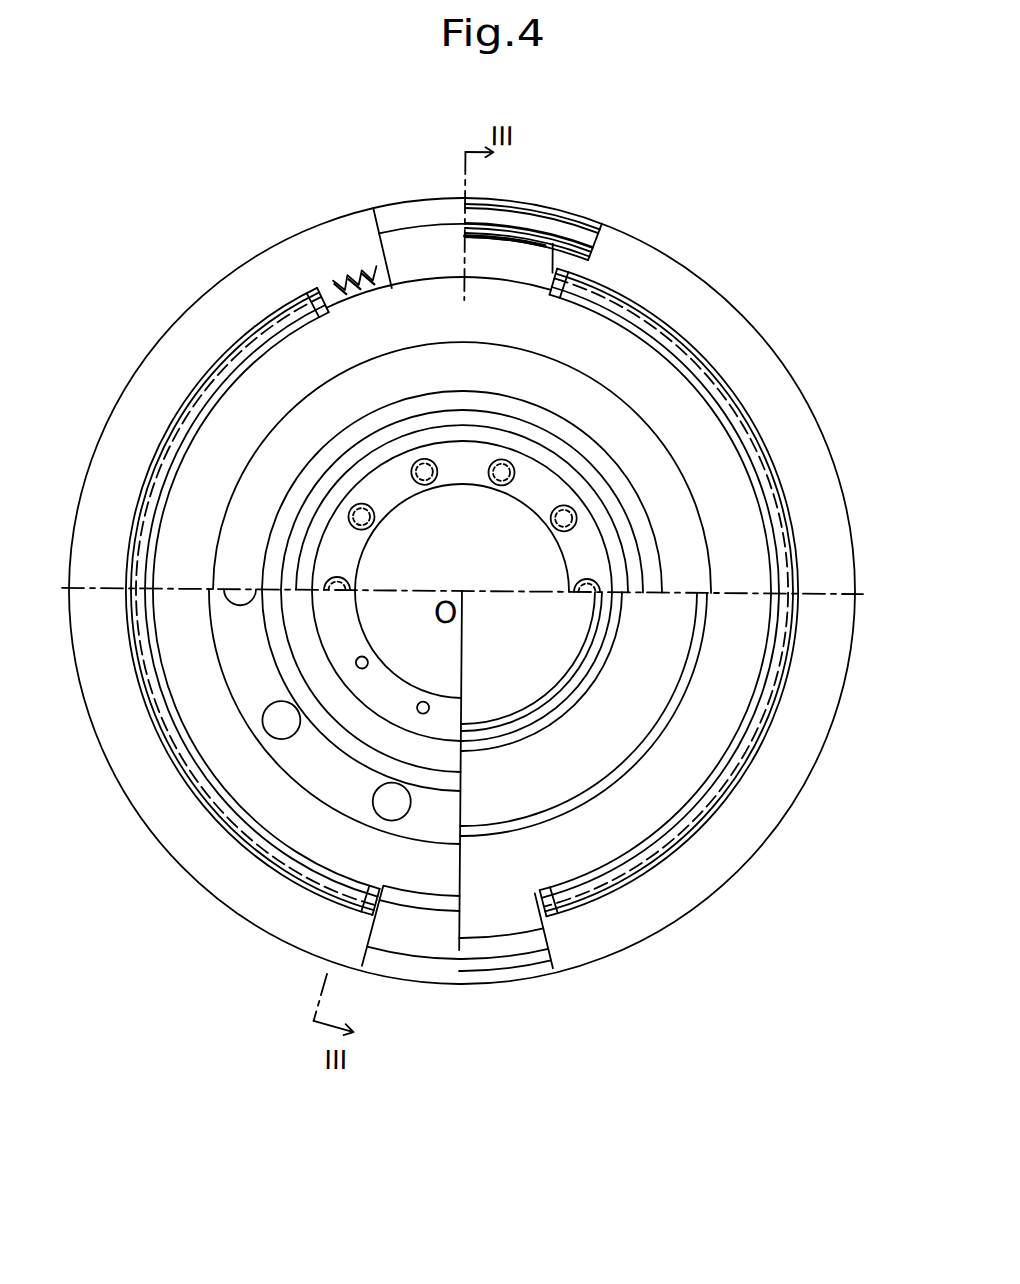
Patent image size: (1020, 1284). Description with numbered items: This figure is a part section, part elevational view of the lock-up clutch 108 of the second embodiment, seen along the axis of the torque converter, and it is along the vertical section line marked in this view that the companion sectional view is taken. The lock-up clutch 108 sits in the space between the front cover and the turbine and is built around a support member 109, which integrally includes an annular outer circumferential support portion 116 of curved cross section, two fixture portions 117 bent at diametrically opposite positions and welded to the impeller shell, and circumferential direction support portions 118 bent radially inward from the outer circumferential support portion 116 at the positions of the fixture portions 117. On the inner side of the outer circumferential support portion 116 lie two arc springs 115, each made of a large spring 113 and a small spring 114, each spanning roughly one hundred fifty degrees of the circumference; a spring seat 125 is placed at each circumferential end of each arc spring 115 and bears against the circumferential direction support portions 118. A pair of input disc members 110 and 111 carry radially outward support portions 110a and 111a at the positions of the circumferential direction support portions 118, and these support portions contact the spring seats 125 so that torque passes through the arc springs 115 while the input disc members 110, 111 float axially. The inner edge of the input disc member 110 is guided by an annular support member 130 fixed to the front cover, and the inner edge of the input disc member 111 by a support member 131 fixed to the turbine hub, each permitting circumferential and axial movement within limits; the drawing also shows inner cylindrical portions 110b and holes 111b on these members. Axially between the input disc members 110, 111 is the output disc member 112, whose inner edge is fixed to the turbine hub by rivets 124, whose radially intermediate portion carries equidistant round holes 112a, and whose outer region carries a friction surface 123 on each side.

The lock-up clutch 108 is at (677, 122).
The support member 109 is at (640, 222).
The input disc member 110 is at (620, 747).
The support portion 110a is at (530, 968).
The inner cylindrical portion of piston 110b is at (572, 690).
The input disc member 111 is at (542, 356).
The support portion 111a is at (500, 258).
The holes of drive plate 111b is at (354, 664).
The output disc member 112 is at (298, 767).
The round holes 112a is at (234, 600).
The large spring 113 is at (320, 290).
The small spring 114 is at (340, 283).
The arc spring 115 is at (273, 137).
The outer circumferential support portion 116 is at (193, 330).
The fixture portion 117 is at (508, 215).
The circumferential direction support portion 118 is at (390, 252).
The friction surface 123 is at (303, 838).
The rivets 124 is at (497, 488).
The spring seat 125 is at (387, 282).
The annular support member 130 is at (535, 707).
The support member 131 is at (578, 438).